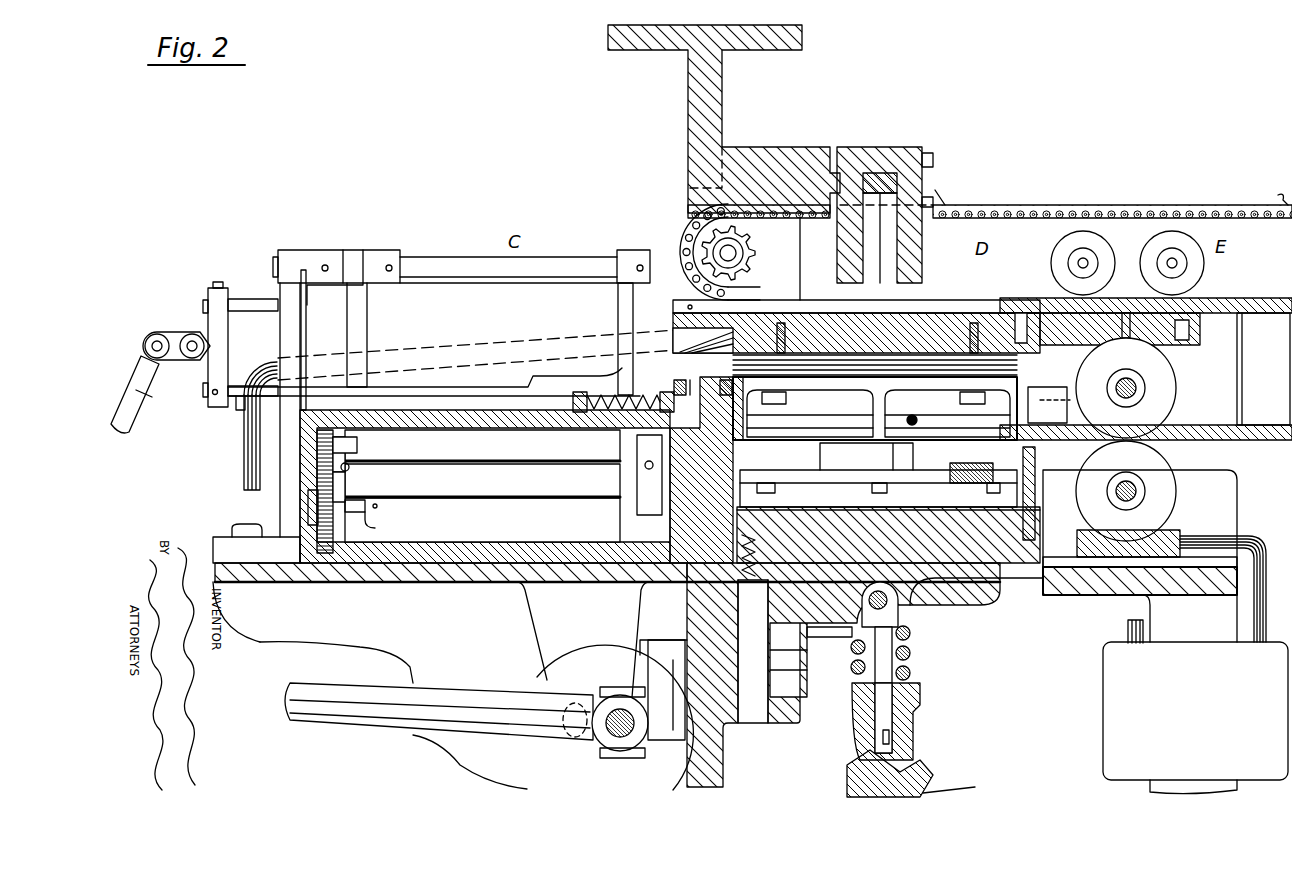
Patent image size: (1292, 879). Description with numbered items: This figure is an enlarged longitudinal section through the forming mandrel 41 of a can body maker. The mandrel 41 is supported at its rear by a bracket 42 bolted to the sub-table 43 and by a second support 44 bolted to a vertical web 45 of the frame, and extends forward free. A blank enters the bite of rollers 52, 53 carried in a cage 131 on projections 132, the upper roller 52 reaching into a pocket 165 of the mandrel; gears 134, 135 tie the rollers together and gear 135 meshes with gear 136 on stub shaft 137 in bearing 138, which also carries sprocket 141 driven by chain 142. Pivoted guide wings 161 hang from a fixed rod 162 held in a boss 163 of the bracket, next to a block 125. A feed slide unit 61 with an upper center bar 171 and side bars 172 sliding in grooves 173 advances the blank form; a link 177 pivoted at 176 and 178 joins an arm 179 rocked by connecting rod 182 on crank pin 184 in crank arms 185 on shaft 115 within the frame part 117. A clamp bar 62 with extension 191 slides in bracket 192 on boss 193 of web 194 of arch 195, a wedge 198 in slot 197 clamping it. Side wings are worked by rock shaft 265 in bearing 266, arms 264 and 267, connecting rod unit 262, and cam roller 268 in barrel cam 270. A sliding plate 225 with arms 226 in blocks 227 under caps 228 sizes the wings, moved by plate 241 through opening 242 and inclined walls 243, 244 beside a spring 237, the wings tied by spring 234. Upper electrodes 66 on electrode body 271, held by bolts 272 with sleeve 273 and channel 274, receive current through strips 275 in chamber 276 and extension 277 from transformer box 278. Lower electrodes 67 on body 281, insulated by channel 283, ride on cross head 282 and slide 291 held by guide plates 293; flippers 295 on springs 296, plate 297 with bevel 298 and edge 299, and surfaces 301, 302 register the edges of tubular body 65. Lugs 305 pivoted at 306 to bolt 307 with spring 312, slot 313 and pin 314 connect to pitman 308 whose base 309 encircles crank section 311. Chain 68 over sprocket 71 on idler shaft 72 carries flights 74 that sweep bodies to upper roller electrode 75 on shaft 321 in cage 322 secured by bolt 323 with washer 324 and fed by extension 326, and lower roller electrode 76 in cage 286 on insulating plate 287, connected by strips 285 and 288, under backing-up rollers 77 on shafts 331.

The arch 195 is at (808, 42).
The web 194 is at (722, 72).
The boss 193 is at (800, 155).
The transverse slot 197 is at (893, 178).
The wedge member 198 is at (880, 173).
The bracket 192 is at (918, 183).
The upward extension 191 is at (893, 228).
The forming mandrel 41 is at (1262, 298).
The conveyor chain 68 is at (1062, 208).
The flights 74 is at (940, 207).
The idler shaft 72 is at (730, 253).
The sprocket 71 is at (760, 232).
The boss 163 is at (293, 252).
The pivoted guide wings 161 is at (639, 252).
The fixed rod 162 is at (463, 260).
The grooves 173 is at (552, 387).
The central chamber 276 is at (622, 378).
The block 125 is at (223, 325).
The upper center bar 171 is at (247, 300).
The pivot connection 178 is at (152, 345).
The pivot connection 176 is at (192, 334).
The link 177 is at (160, 338).
The arm 179 is at (135, 412).
The side bars 172 is at (238, 405).
The bracket 42 is at (262, 455).
The strip extension 277 is at (252, 475).
The cage 131 is at (478, 542).
The recess or pocket 165 is at (412, 428).
The upper roller 52 is at (482, 445).
The lower roller 53 is at (482, 480).
The gear 136 is at (317, 547).
The gear 134 is at (357, 445).
The gear 135 is at (352, 478).
The stub shaft 137 is at (385, 505).
The bearing 138 is at (380, 525).
The sprocket 141 is at (315, 503).
The drive chain 142 is at (305, 528).
The projection 132 is at (637, 482).
The sliding plate 225 is at (630, 438).
The second support 44 is at (640, 500).
The inclined surface 301 is at (660, 520).
The vertical web 45 is at (672, 538).
The spring 237 is at (620, 395).
The opening 242 is at (692, 380).
The inclined wall 243 is at (678, 392).
The inclined wall 244 is at (723, 392).
The clamp bar 62 is at (945, 300).
The feed slide unit 61 is at (687, 300).
The tubular body 65 is at (800, 300).
The bolts 272 is at (995, 300).
The electrode body 271 is at (947, 413).
The insulating sleeve 273 is at (791, 390).
The channel member 274 is at (852, 360).
The electrical conducting strips 275 is at (946, 390).
The upper electrodes 66 is at (882, 400).
The spring 234 is at (920, 423).
The lower electrodes 67 is at (868, 468).
The electrode body 281 is at (838, 491).
The channel member 283 is at (968, 484).
The strips 285 is at (950, 467).
The vertically movable plate 241 is at (730, 440).
The lugs 305 is at (762, 445).
The inclined surface 302 is at (750, 462).
The flipper members 295 is at (1038, 452).
The plate 299 is at (1038, 464).
The beveled edge 298 is at (1040, 485).
The plate 297 is at (1038, 495).
The stationary shaft 331 is at (1083, 258).
The backing-up rollers 77 is at (1150, 258).
The strip extension 326 is at (1035, 320).
The bolt 323 is at (1127, 313).
The cage 322 is at (1175, 348).
The washer 324 is at (1178, 330).
The upper roller electrode 75 is at (1170, 410).
The shaft 321 is at (1137, 388).
The cap 228 is at (1070, 380).
The blocks 227 is at (1075, 400).
The arms 226 is at (1026, 390).
The lower roller electrode 76 is at (1175, 488).
The cross head 282 is at (1020, 580).
The spring 296 is at (687, 580).
The cage 286 is at (1185, 535).
The sub-table 43 is at (285, 582).
The insulating plate 287 is at (1190, 595).
The laminated strips 288 is at (1262, 643).
The transformer box 278 is at (1195, 718).
The frame 117 is at (528, 597).
The barrel cam 270 is at (530, 762).
The connecting rod 182 is at (342, 718).
The shaft 115 is at (588, 715).
The crank pin 184 is at (605, 745).
The crank arms 185 is at (588, 692).
The cam roller 268 is at (658, 742).
The bearing 266 is at (683, 647).
The rock shaft 265 is at (645, 655).
The arm 267 is at (660, 678).
The slide 291 is at (765, 740).
The connecting rod unit 262 is at (822, 637).
The guide plates 293 is at (800, 675).
The arm 264 is at (835, 690).
The pivot connection 306 is at (890, 600).
The headed bolt 307 is at (912, 652).
The spring 312 is at (912, 672).
The pitman 308 is at (915, 720).
The cross slot 313 is at (892, 735).
The pin 314 is at (892, 745).
The cylindrical base 309 is at (920, 780).
The crank section 311 is at (935, 790).